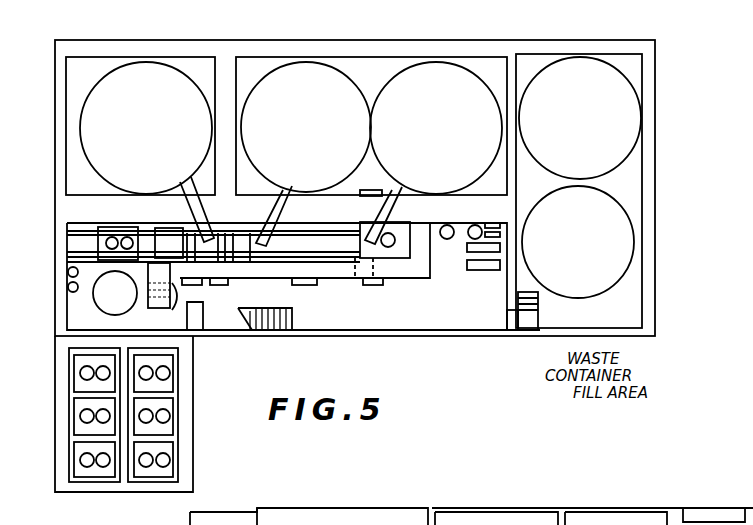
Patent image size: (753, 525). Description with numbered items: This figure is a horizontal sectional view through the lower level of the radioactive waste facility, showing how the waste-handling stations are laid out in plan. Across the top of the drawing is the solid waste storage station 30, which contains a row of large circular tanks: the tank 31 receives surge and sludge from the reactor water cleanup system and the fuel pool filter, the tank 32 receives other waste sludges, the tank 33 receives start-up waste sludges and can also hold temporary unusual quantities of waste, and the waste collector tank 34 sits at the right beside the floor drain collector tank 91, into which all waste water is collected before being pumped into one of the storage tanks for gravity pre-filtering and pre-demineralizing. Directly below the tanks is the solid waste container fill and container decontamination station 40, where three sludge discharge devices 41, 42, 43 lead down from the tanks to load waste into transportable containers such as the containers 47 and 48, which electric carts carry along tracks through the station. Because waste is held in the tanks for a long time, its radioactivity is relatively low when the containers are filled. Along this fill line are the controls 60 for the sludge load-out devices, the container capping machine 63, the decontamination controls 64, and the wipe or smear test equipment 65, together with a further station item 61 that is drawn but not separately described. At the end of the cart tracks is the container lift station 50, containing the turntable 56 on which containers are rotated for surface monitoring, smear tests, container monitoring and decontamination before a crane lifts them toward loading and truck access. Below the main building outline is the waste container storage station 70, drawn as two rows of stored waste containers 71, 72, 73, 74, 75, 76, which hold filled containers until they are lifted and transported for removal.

The solid waste storage station 30 is at (224, 58).
The tank 31 is at (157, 139).
The tank 32 is at (318, 139).
The tank 33 is at (449, 139).
The waste collector tank 34 is at (584, 133).
The floor drain collector tank 91 is at (586, 251).
The transportable container 48 is at (113, 234).
The sludge discharge device 41 is at (212, 241).
The sludge discharge device 42 is at (259, 243).
The sludge discharge device 43 is at (369, 238).
The transportable container 47 is at (400, 232).
The container lift station 50 is at (75, 242).
The turntable 56 is at (100, 302).
The decontamination controls 64 is at (196, 278).
The wipe or smear test equipment 65 is at (175, 300).
The controls 60 is at (228, 282).
The container capping machine 63 is at (300, 285).
The control station 61 is at (373, 285).
The solid waste container fill and container decontamination station 40 is at (473, 318).
The waste container storage station 70 is at (138, 488).
The waste container 71 is at (94, 469).
The waste container 72 is at (82, 421).
The waste container 73 is at (82, 383).
The waste container 74 is at (170, 366).
The waste container 75 is at (170, 405).
The waste container 76 is at (170, 452).